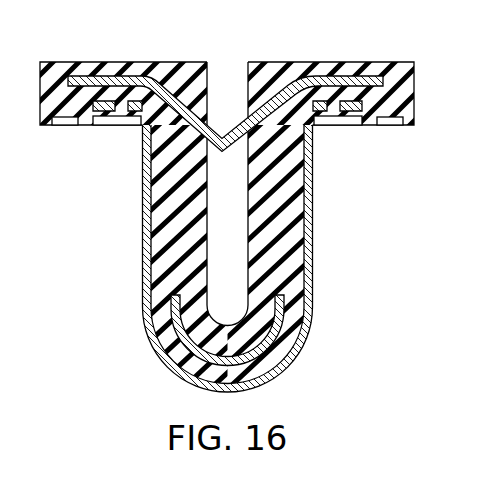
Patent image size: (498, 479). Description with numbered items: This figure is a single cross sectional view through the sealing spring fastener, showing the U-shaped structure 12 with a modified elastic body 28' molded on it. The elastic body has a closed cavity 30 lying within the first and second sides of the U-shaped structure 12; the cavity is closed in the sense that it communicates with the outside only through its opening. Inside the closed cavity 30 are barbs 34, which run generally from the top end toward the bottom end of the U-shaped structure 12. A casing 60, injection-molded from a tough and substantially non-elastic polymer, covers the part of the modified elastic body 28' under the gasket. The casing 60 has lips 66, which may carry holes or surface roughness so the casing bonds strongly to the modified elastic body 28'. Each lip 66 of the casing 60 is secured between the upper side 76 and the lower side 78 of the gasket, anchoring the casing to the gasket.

The U-shaped structure 12 is at (338, 76).
The modified elastic body 28' is at (256, 263).
The closed cavity 30 is at (216, 252).
The barbs 34 is at (211, 124).
The casing 60 is at (310, 302).
The lips 66 is at (340, 106).
The upper side 76 is at (105, 61).
The lower side 78 is at (64, 126).